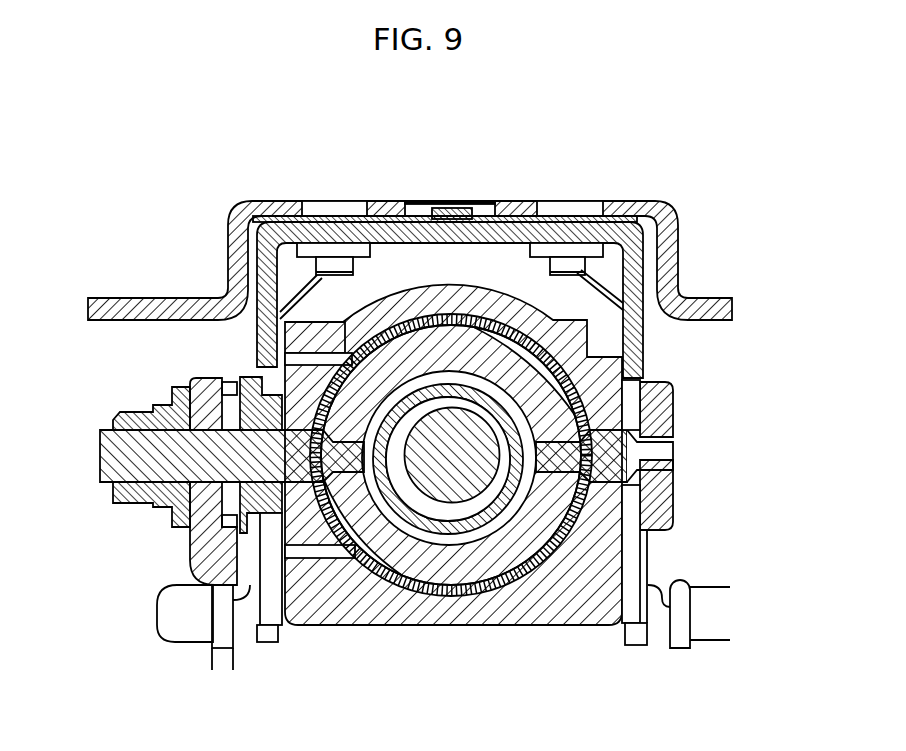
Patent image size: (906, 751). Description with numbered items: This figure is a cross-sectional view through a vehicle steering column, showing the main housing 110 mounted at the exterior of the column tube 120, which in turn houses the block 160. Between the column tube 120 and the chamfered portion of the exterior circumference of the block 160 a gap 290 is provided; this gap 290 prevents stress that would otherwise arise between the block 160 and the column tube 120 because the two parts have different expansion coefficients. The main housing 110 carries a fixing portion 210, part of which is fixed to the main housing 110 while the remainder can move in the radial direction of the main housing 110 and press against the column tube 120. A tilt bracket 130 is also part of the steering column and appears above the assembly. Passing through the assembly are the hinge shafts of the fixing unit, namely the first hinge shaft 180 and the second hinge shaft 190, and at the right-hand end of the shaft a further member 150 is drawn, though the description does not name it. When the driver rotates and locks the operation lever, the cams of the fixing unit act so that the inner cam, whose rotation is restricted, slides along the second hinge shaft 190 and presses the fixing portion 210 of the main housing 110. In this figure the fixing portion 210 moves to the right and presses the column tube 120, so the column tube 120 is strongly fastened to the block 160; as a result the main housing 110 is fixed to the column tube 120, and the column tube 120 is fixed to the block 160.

The main housing 110 is at (577, 607).
The column tube 120 is at (512, 590).
The tilt bracket 130 is at (385, 236).
The fixing member 150 is at (673, 440).
The block 160 is at (423, 570).
The first hinge shaft 180 is at (637, 475).
The second hinge shaft 190 is at (100, 456).
The fixing portion 210 is at (310, 540).
The gap 290 is at (540, 535).